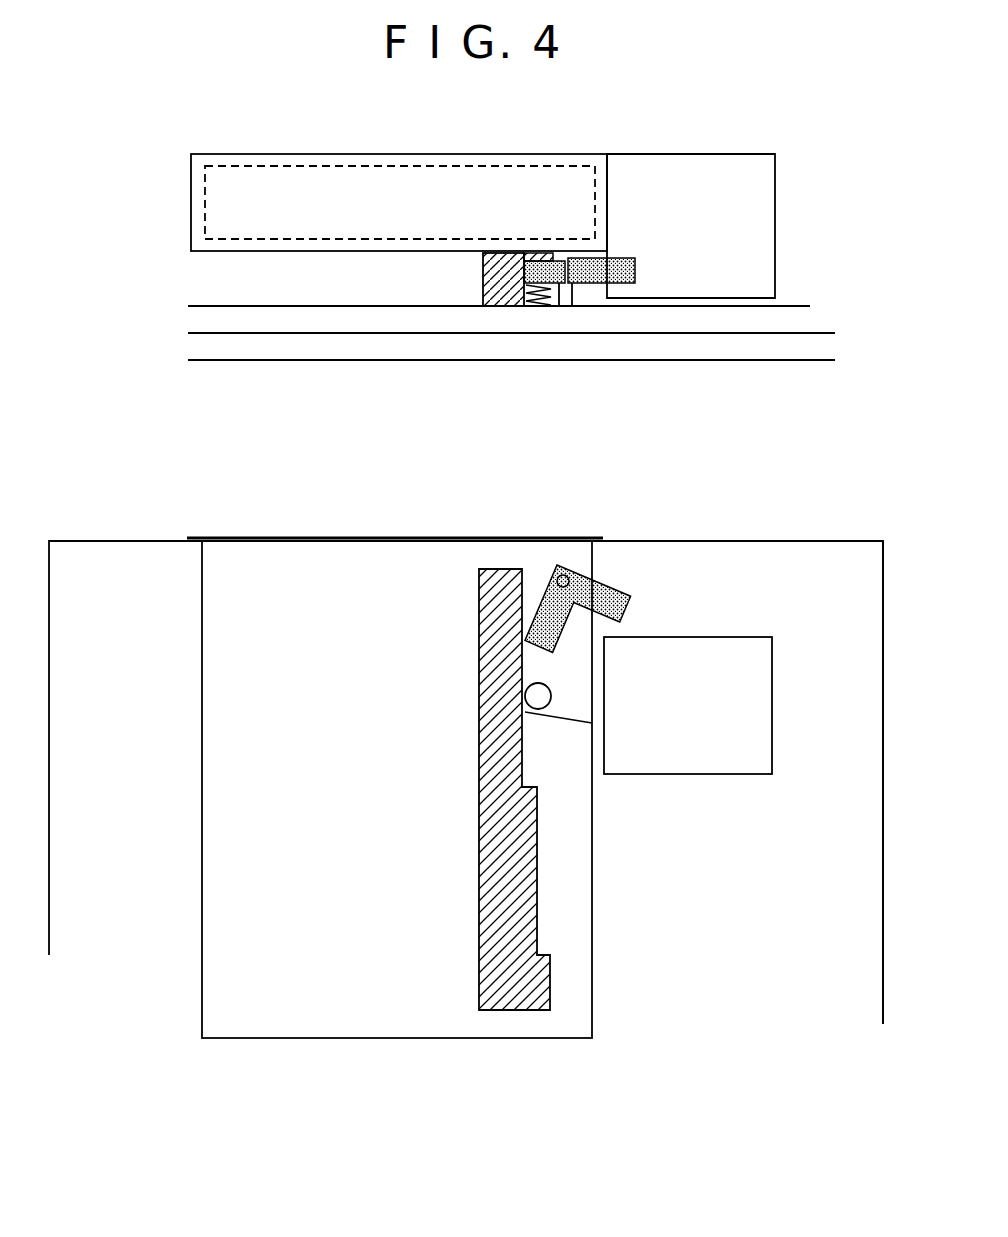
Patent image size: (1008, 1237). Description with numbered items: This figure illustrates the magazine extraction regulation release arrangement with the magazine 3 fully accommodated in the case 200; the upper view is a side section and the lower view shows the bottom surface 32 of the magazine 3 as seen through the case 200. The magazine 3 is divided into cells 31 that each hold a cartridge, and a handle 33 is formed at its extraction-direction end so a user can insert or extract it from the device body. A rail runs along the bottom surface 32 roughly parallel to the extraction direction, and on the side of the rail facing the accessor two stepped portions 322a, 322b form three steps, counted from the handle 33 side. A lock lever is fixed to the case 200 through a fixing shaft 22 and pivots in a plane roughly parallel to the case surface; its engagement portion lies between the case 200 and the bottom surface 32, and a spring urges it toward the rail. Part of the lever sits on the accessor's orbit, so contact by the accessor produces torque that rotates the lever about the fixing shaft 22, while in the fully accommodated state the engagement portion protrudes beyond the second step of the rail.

The magazine 3 is at (240, 241).
The fixing shaft 22 is at (570, 575).
The cell 31 is at (192, 200).
The bottom surface 32 is at (248, 568).
The handle 33 is at (307, 540).
The case 200 is at (745, 348).
The stepped portion 322a is at (523, 788).
The stepped portion 322b is at (538, 955).